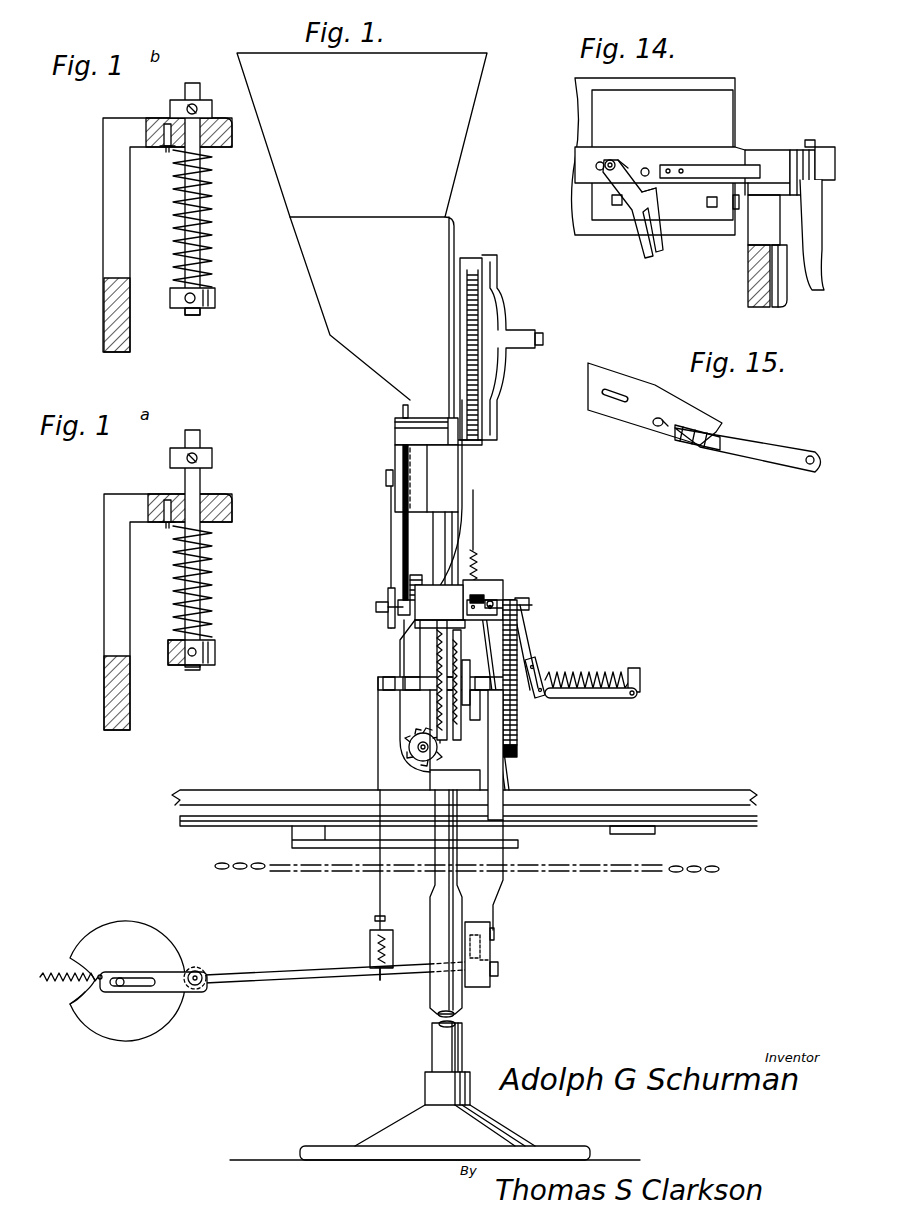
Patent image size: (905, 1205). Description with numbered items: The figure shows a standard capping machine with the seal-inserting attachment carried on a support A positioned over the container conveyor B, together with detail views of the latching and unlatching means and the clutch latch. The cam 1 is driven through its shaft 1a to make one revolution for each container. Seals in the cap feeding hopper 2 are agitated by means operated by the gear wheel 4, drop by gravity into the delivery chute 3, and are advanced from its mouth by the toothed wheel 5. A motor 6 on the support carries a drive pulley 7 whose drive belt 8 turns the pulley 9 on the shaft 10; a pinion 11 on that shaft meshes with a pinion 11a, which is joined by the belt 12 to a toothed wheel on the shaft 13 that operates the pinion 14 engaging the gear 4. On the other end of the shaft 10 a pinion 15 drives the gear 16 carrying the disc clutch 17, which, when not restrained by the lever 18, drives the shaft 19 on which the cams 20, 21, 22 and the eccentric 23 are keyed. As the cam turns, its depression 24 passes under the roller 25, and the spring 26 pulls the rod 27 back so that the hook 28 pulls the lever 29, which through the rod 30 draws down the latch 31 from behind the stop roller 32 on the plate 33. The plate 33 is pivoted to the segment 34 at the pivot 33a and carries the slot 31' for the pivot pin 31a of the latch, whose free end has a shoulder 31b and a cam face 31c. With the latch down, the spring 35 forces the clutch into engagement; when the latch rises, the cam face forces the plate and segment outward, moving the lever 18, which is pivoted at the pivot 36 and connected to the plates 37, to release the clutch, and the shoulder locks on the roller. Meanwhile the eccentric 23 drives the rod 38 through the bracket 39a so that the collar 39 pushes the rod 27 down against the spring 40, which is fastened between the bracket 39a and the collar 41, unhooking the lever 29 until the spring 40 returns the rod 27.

In FIG. 1, the cam 1 is at (150, 937).
In FIG. 1, the shaft 1a is at (120, 986).
In FIG. 1, the cap feeding hopper 2 is at (458, 145).
In FIG. 1, the delivery chute 3 is at (340, 305).
In FIG. 1, the gear wheel 4 is at (500, 372).
In FIG. 1, the toothed wheel 5 is at (410, 740).
In FIG. 1, the motor 6 is at (415, 460).
In FIG. 1, the drive pulley 7 is at (386, 478).
In FIG. 1, the drive belt 8 is at (390, 548).
In FIG. 1, the pulley 9 is at (388, 620).
In FIG. 1, the shaft 10 is at (378, 605).
In FIG. 1, the pinion 11 is at (400, 628).
In FIG. 1, the pinion 11a is at (418, 578).
In FIG. 1, the belt 12 is at (403, 525).
In FIG. 1, the shaft 13 is at (436, 422).
In FIG. 1, the pinion 14 is at (482, 442).
In FIG. 1, the pinion 15 is at (503, 595).
In FIG. 14, the gear 16 is at (742, 283).
In FIG. 1, the gear 16 is at (518, 750).
In FIG. 14, the disc clutch 17 is at (790, 288).
In FIG. 1, the disc clutch 17 is at (518, 722).
In FIG. 14, the lever 18 is at (815, 215).
In FIG. 1, the lever 18 is at (528, 640).
In FIG. 1, the shaft 19 is at (476, 690).
In FIG. 1, the cam 20 is at (410, 640).
In FIG. 1, the cam 21 is at (460, 670).
In FIG. 1, the cam 22 is at (487, 672).
In FIG. 1, the eccentric 23 is at (388, 680).
In FIG. 1, the depression 24 is at (75, 1000).
In FIG. 1, the roller 25 is at (205, 988).
In FIG. 1, the spring 26 is at (52, 970).
In FIG. 1B, the rod 27 is at (108, 300).
In FIG. 1A, the rod 27 is at (108, 683).
In FIG. 1, the rod 27 is at (290, 965).
In FIG. 1, the hook 28 is at (498, 970).
In FIG. 1, the lever 29 is at (497, 935).
In FIG. 1, the rod 30 is at (480, 625).
In FIG. 14, the latch 31 is at (637, 221).
In FIG. 1, the latch 31 is at (498, 578).
In FIG. 14, the slot 31' is at (560, 171).
In FIG. 15, the slot 31' is at (643, 409).
In FIG. 14, the pivot pin 31a is at (606, 170).
In FIG. 14, the shoulder 31b is at (660, 182).
In FIG. 14, the cam face 31c is at (630, 160).
In FIG. 14, the stop roller 32 is at (648, 168).
In FIG. 15, the stop roller 32 is at (656, 430).
In FIG. 1, the stop roller 32 is at (495, 600).
In FIG. 14, the plate 33 is at (700, 178).
In FIG. 15, the plate 33 is at (755, 445).
In FIG. 1, the plate 33 is at (505, 603).
In FIG. 14, the pivot 33a is at (760, 160).
In FIG. 14, the segment 34 is at (740, 148).
In FIG. 1, the segment 34 is at (530, 605).
In FIG. 1, the spring 35 is at (598, 672).
In FIG. 1, the pivot 36 is at (540, 663).
In FIG. 1, the plates 37 is at (583, 690).
In FIG. 1B, the rod 38 is at (185, 90).
In FIG. 1A, the rod 38 is at (200, 432).
In FIG. 1, the rod 38 is at (378, 745).
In FIG. 1B, the collar 39 is at (205, 108).
In FIG. 1A, the collar 39 is at (213, 458).
In FIG. 1, the collar 39 is at (378, 917).
In FIG. 1B, the bracket 39a is at (112, 142).
In FIG. 1A, the bracket 39a is at (115, 505).
In FIG. 1B, the spring 40 is at (210, 222).
In FIG. 1A, the spring 40 is at (212, 592).
In FIG. 1, the spring 40 is at (370, 944).
In FIG. 1B, the collar 41 is at (216, 297).
In FIG. 1A, the collar 41 is at (216, 655).
In FIG. 1, the collar 41 is at (372, 972).
In FIG. 1, the support A is at (430, 1042).
In FIG. 1, the container conveyor B is at (655, 805).